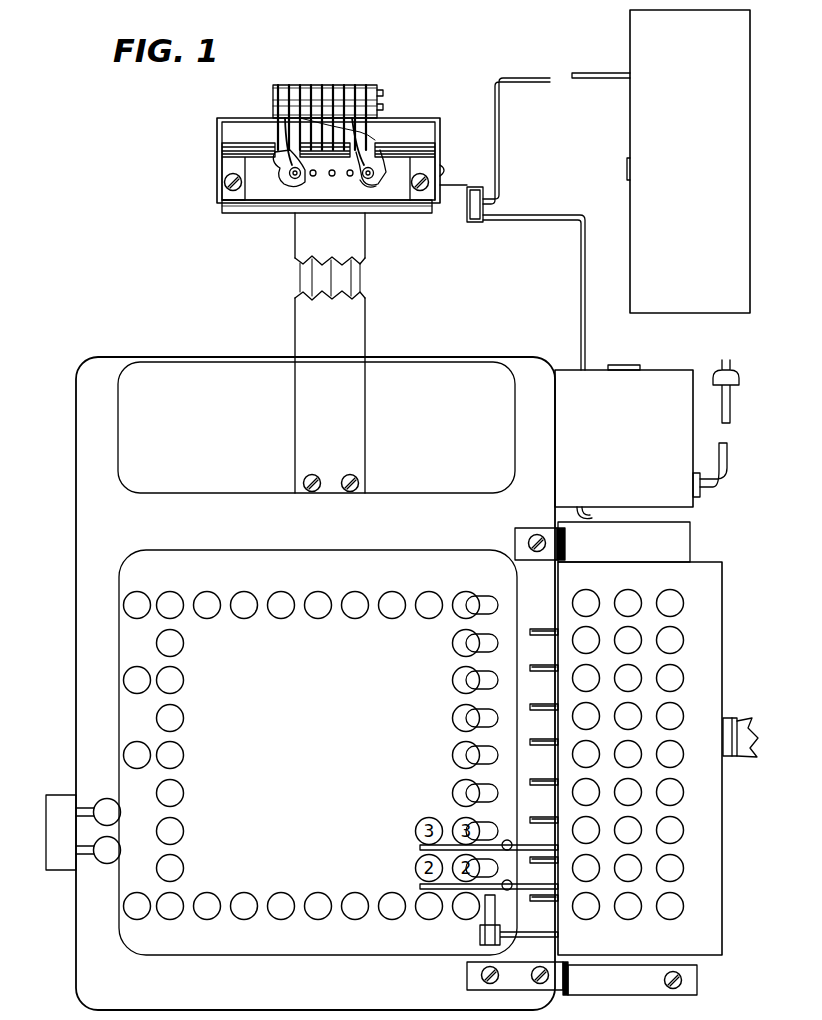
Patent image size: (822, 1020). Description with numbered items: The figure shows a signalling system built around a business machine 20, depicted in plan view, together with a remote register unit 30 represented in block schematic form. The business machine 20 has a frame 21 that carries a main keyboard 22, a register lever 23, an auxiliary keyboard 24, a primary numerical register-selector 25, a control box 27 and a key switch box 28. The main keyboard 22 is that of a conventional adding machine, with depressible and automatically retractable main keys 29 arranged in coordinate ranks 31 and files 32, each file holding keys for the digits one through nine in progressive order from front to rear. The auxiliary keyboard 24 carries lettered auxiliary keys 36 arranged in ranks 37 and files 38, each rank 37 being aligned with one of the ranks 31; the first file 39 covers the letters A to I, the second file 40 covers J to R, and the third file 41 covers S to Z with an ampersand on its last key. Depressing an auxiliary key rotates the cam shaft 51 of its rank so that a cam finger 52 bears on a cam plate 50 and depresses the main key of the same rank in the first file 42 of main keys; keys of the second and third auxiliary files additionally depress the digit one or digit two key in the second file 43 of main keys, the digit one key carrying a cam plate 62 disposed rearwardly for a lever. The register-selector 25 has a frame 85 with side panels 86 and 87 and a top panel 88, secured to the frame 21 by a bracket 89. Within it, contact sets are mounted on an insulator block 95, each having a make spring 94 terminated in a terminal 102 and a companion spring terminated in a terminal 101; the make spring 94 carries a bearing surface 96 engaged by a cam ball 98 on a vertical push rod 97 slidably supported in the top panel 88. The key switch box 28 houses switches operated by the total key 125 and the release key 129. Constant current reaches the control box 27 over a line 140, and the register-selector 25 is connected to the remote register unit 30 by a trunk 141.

The business machine 20 is at (297, 683).
The frame 21 is at (275, 442).
The main keyboard 22 is at (304, 752).
The register lever 23 is at (740, 720).
The auxiliary keyboard 24 is at (655, 738).
The primary numerical register-selector 25 is at (330, 146).
The control box 27 is at (591, 361).
The key switch box 28 is at (58, 819).
The main keys 29 is at (424, 663).
The remote register unit 30 is at (616, 161).
The ranks 31 is at (234, 757).
The files 32 is at (326, 717).
The auxiliary keys 36 is at (685, 811).
The ranks 37 is at (667, 755).
The files 38 is at (628, 725).
The first file 39 is at (582, 938).
The second file 40 is at (626, 938).
The third file 41 is at (670, 938).
The first file of main keys 42 is at (465, 923).
The second file of main keys 43 is at (429, 923).
The cam plate 50 is at (459, 799).
The cam shaft 51 is at (537, 795).
The cam finger 52 is at (519, 920).
The cam plate 62 is at (472, 865).
The frame 85 is at (309, 160).
The side panel 86 is at (248, 145).
The side panel 87 is at (372, 146).
The top panel 88 is at (327, 218).
The bracket 89 is at (314, 353).
The make spring 94 is at (345, 130).
The insulator block 95 is at (343, 108).
The bearing surface 96 is at (316, 175).
The push rod 97 is at (381, 167).
The cam ball 98 is at (383, 190).
The terminal 101 is at (319, 110).
The terminal 102 is at (369, 109).
The total key 125 is at (101, 798).
The release key 129 is at (102, 861).
The line 140 is at (727, 436).
The trunk 141 is at (604, 501).